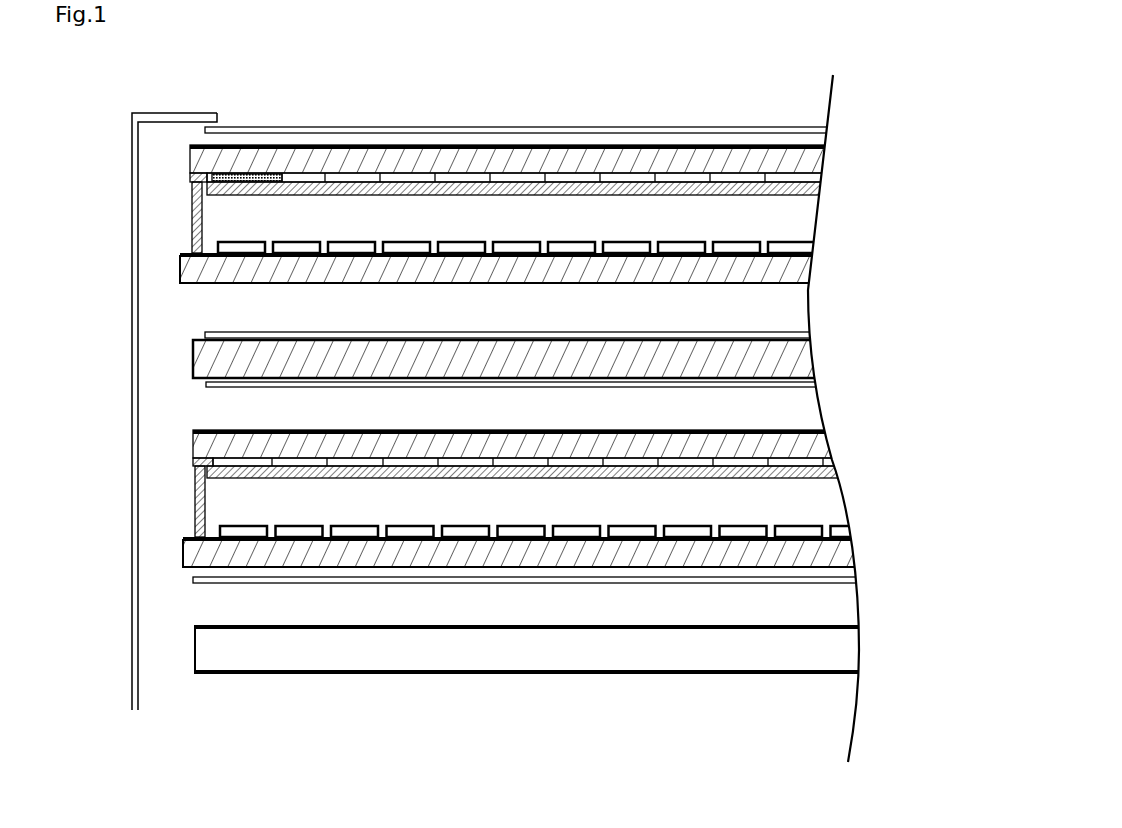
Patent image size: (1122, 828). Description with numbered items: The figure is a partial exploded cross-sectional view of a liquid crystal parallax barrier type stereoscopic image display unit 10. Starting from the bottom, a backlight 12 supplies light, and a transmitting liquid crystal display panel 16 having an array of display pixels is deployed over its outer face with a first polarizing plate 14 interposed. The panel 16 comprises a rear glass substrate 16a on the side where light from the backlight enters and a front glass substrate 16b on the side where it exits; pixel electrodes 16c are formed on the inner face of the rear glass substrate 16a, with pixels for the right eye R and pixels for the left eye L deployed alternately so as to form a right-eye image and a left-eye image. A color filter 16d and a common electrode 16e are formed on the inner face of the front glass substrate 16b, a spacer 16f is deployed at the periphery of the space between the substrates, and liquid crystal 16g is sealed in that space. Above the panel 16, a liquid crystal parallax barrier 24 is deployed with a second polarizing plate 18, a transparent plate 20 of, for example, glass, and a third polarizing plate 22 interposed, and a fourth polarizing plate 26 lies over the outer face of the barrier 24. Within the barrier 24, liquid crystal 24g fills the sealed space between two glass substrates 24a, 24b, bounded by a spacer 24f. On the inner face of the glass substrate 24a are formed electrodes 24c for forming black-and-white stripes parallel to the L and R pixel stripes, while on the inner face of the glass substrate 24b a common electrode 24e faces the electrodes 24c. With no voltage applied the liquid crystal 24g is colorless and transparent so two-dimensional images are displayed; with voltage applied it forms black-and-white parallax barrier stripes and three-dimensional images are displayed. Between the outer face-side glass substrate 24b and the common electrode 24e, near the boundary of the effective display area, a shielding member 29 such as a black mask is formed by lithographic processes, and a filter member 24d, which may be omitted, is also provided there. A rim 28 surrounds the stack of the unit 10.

The stereoscopic image display unit 10 is at (646, 87).
The backlight 12 is at (242, 653).
The first polarizing plate 14 is at (330, 583).
The transmitting liquid crystal display panel 16 is at (158, 502).
The rear glass substrate 16a is at (837, 562).
The front glass substrate 16b is at (817, 448).
The pixel electrodes 16c is at (837, 537).
The color filter 16d is at (828, 465).
The common electrode 16e is at (840, 478).
The spacer 16f is at (195, 528).
The liquid crystal 16g is at (833, 510).
The second polarizing plate 18 is at (207, 383).
The transparent plate 20 is at (207, 360).
The third polarizing plate 22 is at (207, 335).
The liquid crystal parallax barrier 24 is at (163, 221).
The glass substrate 24a is at (797, 272).
The glass substrate 24b is at (797, 165).
The electrodes 24c is at (793, 252).
The filter member 24d is at (563, 125).
The common electrode 24e is at (820, 188).
The spacer 24f is at (195, 240).
The liquid crystal 24g is at (773, 223).
The fourth polarizing plate 26 is at (408, 127).
The rim 28 is at (178, 113).
The shielding member 29 is at (253, 173).